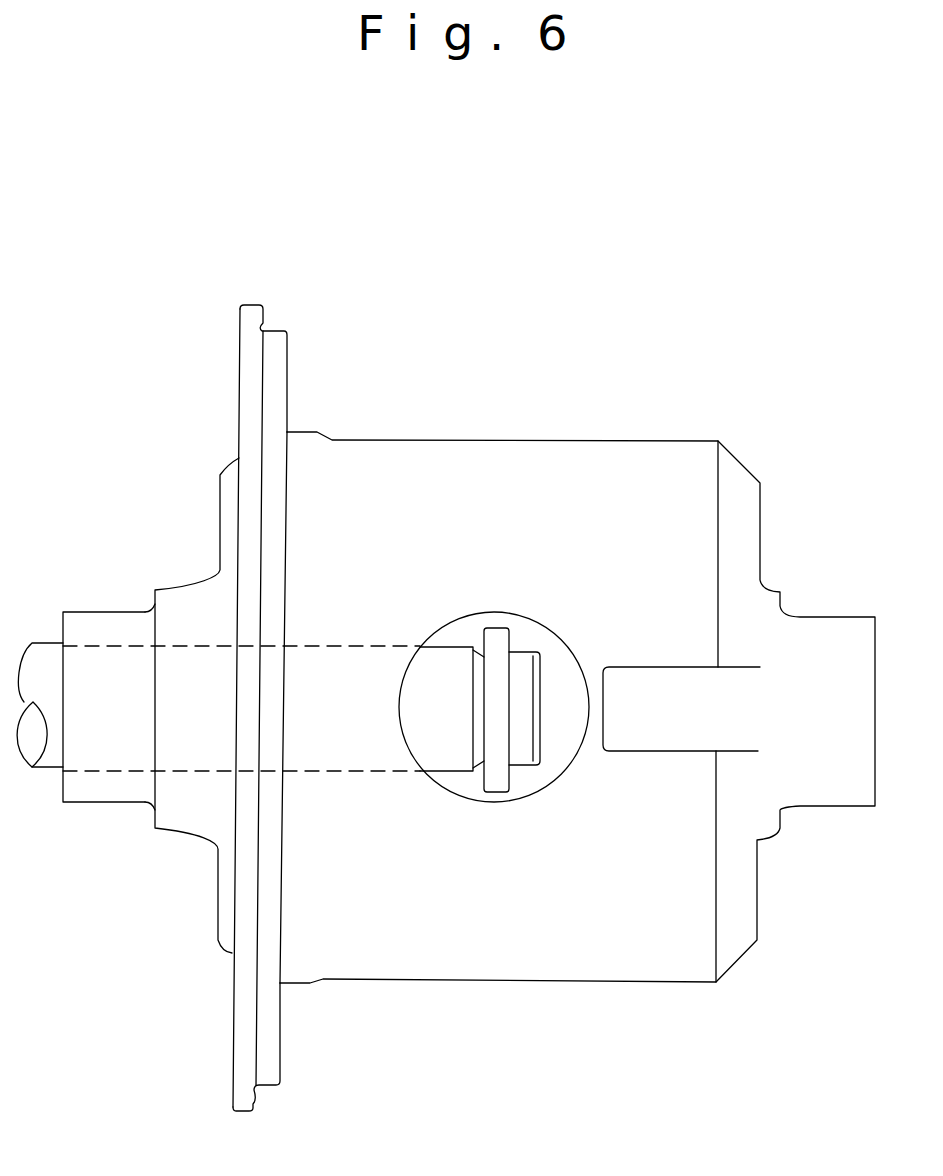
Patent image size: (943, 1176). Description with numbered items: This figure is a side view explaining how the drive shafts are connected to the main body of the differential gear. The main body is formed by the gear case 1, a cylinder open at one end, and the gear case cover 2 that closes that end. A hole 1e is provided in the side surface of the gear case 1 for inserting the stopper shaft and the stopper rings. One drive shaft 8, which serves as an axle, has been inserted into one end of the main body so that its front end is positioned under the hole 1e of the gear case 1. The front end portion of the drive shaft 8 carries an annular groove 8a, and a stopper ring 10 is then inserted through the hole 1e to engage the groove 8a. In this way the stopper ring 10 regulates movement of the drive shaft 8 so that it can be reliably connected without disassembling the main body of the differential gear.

The gear case 1 is at (743, 462).
The hole 1e is at (556, 628).
The gear case cover 2 is at (220, 508).
The drive shaft 8 is at (455, 748).
The annular groove 8a is at (478, 640).
The stopper ring 10 is at (495, 773).